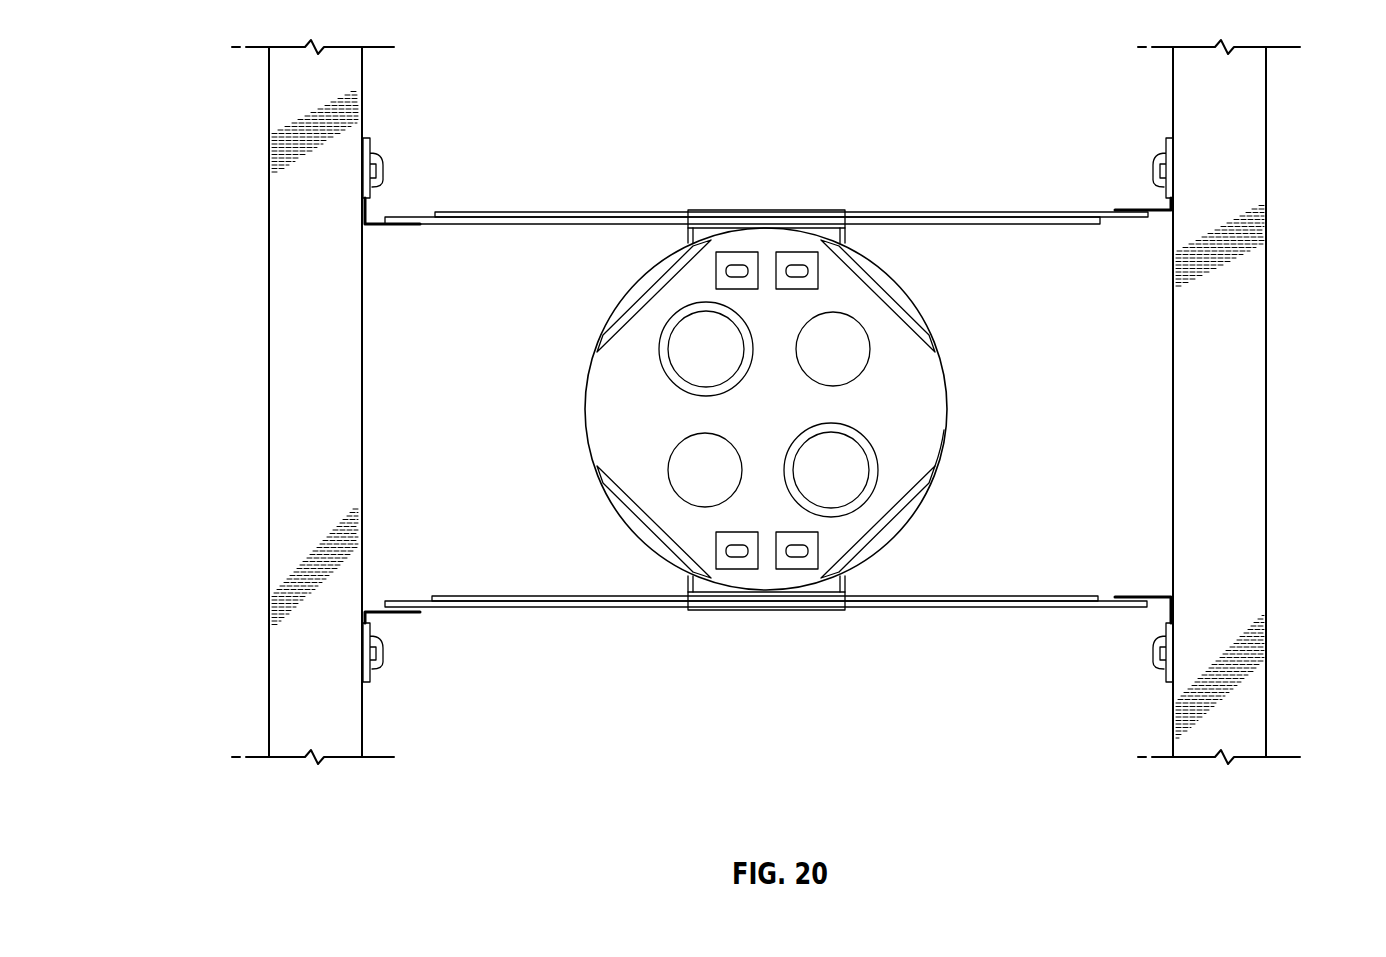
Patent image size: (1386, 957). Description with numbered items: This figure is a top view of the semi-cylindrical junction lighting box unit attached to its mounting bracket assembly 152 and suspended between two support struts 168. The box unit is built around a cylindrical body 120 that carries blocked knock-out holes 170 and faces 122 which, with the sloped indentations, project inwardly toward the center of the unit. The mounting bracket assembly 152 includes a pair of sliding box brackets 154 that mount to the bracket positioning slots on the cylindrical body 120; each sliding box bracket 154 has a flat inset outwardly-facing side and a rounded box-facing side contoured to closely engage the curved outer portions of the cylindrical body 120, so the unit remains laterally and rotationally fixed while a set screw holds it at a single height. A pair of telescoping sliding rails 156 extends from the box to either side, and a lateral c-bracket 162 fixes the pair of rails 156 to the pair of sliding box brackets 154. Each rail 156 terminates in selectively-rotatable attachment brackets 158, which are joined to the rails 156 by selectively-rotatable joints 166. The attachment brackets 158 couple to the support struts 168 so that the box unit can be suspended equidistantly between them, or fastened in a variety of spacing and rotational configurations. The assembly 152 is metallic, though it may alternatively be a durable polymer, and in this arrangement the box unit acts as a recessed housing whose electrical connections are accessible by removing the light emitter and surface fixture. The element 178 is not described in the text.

The cylindrical body 120 is at (585, 396).
The face 122 is at (606, 330).
The mounting bracket assembly 152 is at (766, 394).
The sliding box brackets 154 is at (848, 241).
The telescoping sliding rails 156 is at (956, 212).
The selectively-rotatable attachment brackets 158 is at (384, 167).
The lateral c-bracket 162 is at (781, 210).
The selectively-rotatable joints 166 is at (404, 228).
The support struts 168 is at (270, 361).
The blocked knock-out holes 170 is at (640, 294).
The box wall 178 is at (930, 462).